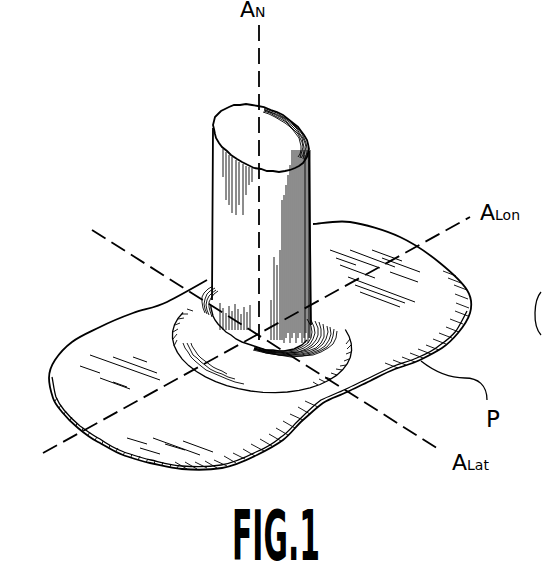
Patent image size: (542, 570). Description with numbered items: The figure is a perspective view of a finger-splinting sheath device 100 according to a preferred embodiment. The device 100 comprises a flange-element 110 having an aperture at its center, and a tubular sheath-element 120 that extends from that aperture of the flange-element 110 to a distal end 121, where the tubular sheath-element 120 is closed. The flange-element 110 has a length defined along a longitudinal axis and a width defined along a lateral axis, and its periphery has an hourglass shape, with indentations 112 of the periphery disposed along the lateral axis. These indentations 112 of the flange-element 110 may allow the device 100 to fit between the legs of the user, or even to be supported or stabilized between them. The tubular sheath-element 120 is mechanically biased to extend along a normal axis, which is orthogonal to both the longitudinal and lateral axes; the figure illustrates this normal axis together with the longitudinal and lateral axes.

The finger-splinting sheath device 100 is at (122, 117).
The flange-element 110 is at (388, 243).
The indentations 112 is at (170, 302).
The tubular sheath-element 120 is at (312, 194).
The distal end 121 is at (264, 112).